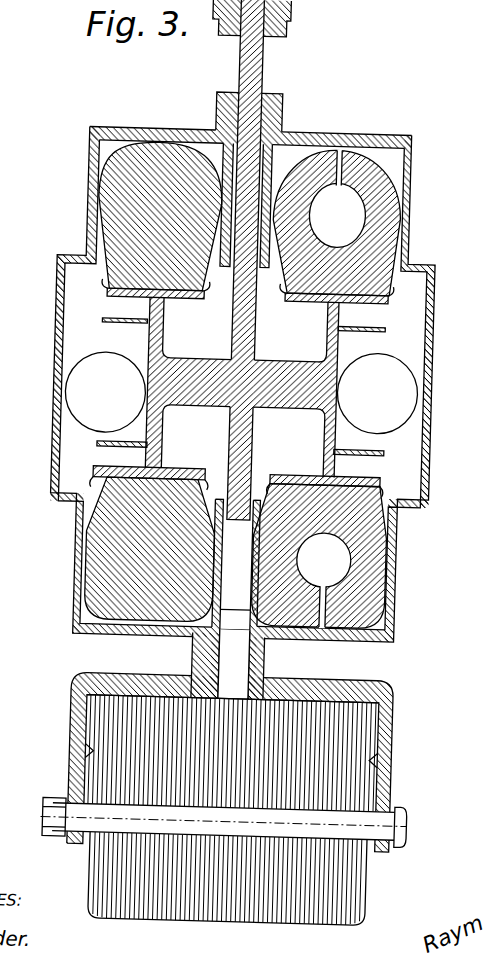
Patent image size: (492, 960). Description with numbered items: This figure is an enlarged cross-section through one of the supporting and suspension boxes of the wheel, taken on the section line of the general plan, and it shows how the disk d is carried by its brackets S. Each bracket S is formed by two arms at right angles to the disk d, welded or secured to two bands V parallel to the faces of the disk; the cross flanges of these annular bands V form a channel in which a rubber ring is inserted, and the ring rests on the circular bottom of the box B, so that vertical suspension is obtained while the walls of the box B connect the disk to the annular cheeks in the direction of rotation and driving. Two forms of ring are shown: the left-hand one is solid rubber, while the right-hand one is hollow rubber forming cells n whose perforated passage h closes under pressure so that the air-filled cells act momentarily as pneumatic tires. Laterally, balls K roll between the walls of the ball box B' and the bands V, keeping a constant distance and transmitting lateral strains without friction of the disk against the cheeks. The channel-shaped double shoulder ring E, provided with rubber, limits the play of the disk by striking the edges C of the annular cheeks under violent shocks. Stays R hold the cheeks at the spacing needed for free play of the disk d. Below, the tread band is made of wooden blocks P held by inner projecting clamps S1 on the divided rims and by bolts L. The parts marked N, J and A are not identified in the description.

The double shoulder ring E is at (278, 20).
The edges of the annular cheeks C is at (246, 165).
The box B is at (244, 389).
The ball box B' is at (241, 382).
The pin N is at (241, 393).
The band V is at (242, 388).
The bracket S is at (242, 387).
The ball K is at (241, 393).
The disk d is at (235, 599).
The stay R is at (229, 612).
The cell n is at (338, 648).
The passage h is at (342, 580).
The hub block J is at (222, 759).
The base block A is at (293, 670).
The wooden block P is at (94, 705).
The inner projecting clamp S1 is at (405, 756).
The bolt L is at (218, 822).